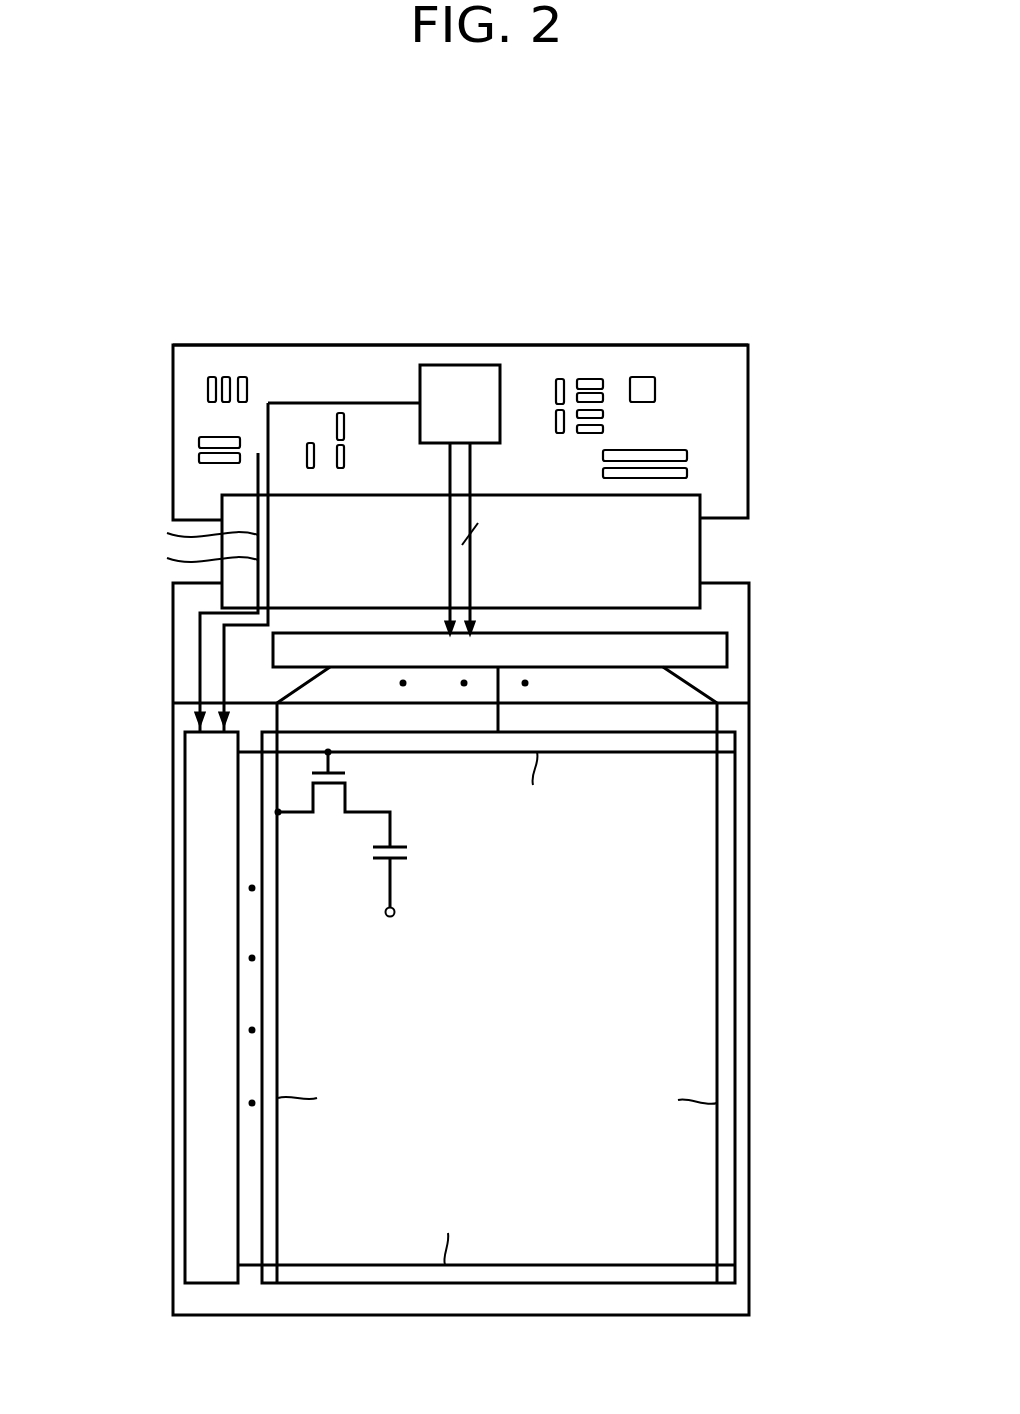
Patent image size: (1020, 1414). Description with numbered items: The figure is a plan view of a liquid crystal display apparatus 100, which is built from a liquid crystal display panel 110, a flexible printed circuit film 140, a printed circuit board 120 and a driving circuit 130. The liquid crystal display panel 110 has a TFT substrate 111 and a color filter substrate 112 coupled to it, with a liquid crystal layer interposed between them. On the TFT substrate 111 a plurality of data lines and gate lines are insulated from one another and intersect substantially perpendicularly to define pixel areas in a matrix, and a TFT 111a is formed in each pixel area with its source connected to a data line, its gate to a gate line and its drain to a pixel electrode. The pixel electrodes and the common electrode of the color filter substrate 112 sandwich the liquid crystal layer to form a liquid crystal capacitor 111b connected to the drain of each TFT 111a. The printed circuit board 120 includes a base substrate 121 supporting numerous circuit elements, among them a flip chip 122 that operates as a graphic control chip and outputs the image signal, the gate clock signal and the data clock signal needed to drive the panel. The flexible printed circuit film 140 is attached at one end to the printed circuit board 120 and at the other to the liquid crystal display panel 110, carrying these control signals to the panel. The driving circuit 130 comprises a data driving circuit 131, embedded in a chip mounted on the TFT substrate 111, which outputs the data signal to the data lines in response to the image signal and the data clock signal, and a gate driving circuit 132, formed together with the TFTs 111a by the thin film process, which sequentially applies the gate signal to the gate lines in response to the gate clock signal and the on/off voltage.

The liquid crystal display apparatus 100 is at (462, 123).
The liquid crystal display panel 110 is at (840, 640).
The TFT substrate 111 is at (749, 651).
The TFT 111a is at (352, 777).
The liquid crystal capacitor 111b is at (415, 853).
The color filter substrate 112 is at (730, 702).
The printed circuit board 120 is at (568, 270).
The base substrate 121 is at (552, 345).
The flip chip 122 is at (470, 385).
The driving circuit 130 is at (92, 682).
The data driving circuit 131 is at (272, 648).
The gate driving circuit 132 is at (207, 743).
The flexible printed circuit film 140 is at (702, 548).